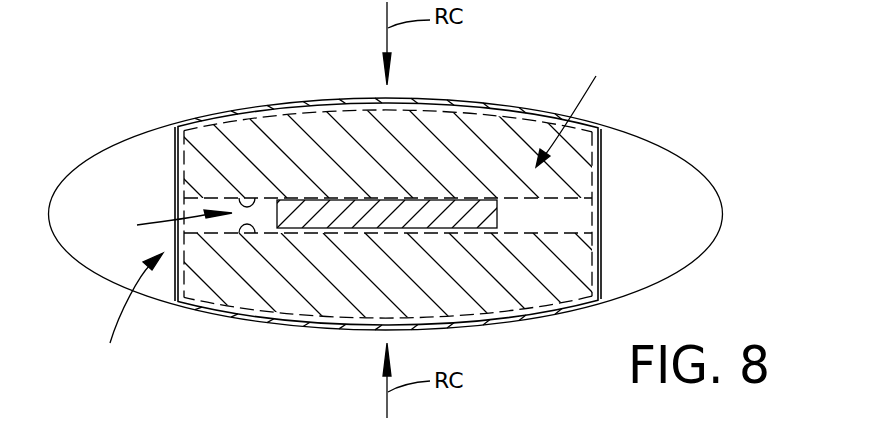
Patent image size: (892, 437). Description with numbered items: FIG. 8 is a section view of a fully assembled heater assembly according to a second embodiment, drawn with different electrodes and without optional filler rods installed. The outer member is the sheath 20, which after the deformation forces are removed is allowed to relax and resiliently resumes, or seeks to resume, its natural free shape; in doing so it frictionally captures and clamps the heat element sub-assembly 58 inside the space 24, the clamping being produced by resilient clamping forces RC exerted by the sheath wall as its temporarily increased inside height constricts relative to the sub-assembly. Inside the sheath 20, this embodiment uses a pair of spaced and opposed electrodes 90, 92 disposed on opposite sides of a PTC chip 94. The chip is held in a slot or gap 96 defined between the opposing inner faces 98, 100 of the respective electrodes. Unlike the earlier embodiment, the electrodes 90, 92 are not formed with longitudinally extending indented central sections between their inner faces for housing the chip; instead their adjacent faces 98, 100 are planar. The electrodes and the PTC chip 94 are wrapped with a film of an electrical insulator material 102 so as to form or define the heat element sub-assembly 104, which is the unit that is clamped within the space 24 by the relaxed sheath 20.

The sheath 20 is at (617, 130).
The space 24 is at (690, 173).
The heat element sub-assembly 58 is at (569, 109).
The electrode 90 is at (493, 138).
The electrode 92 is at (510, 280).
The PTC chip 94 is at (500, 214).
The slot or gap 96 is at (169, 222).
The inner face 98 is at (247, 226).
The inner face 100 is at (249, 204).
The electrical insulator material 102 is at (172, 158).
The heat element sub-assembly 104 is at (126, 309).